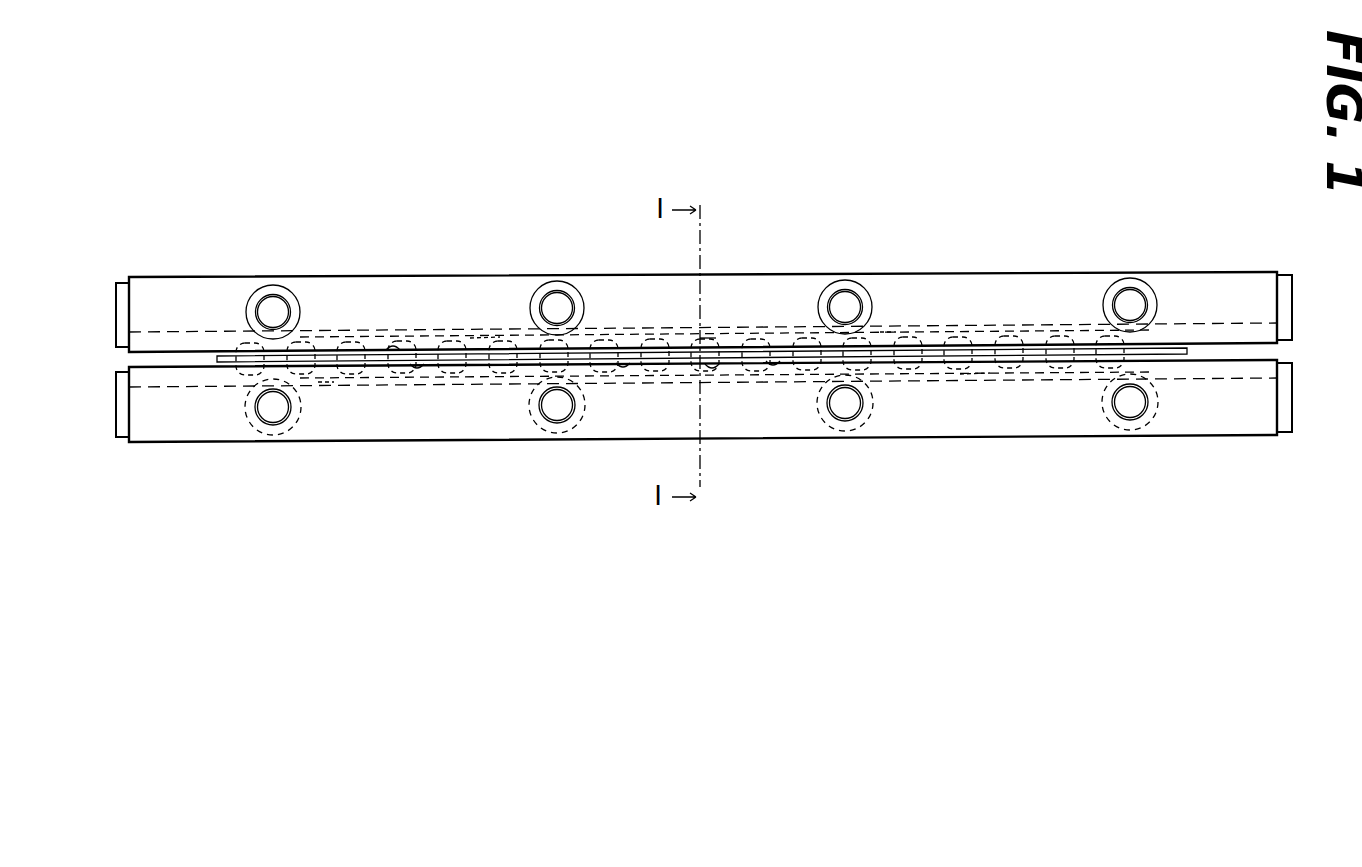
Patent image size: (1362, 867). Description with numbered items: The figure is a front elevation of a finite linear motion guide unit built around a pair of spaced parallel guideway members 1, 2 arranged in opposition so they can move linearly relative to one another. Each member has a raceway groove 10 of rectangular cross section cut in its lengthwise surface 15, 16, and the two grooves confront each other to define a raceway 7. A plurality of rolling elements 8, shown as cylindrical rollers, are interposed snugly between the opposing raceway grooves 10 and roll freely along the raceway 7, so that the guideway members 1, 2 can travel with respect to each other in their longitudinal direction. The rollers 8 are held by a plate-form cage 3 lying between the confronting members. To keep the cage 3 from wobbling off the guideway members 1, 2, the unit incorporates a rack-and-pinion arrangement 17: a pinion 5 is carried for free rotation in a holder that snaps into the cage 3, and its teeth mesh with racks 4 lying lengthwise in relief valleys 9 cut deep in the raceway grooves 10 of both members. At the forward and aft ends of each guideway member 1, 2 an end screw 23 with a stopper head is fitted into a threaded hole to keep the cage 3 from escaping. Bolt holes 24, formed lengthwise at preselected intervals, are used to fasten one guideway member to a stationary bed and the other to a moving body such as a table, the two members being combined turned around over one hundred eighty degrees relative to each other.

The guideway member 1 is at (933, 292).
The guideway member 2 is at (960, 415).
The cage 3 is at (320, 366).
The rack 4 is at (737, 330).
The pinion 5 is at (713, 367).
The raceway 7 is at (623, 352).
The rolling element 8 is at (1045, 337).
The relief valley 9 is at (486, 337).
The raceway groove 10 is at (894, 330).
The lengthwise surface 15 is at (417, 363).
The lengthwise surface 16 is at (393, 358).
The rack-and-pinion arrangement 17 is at (710, 330).
The end screw 23 is at (121, 300).
The bolt hole 24 is at (272, 302).